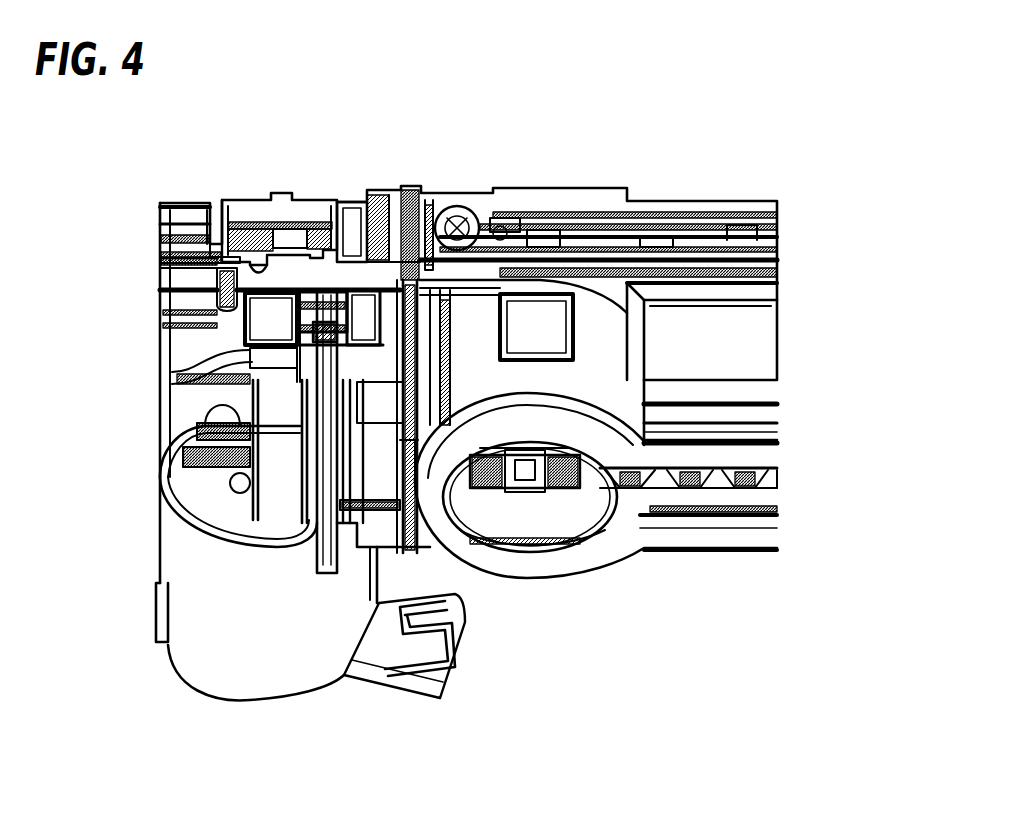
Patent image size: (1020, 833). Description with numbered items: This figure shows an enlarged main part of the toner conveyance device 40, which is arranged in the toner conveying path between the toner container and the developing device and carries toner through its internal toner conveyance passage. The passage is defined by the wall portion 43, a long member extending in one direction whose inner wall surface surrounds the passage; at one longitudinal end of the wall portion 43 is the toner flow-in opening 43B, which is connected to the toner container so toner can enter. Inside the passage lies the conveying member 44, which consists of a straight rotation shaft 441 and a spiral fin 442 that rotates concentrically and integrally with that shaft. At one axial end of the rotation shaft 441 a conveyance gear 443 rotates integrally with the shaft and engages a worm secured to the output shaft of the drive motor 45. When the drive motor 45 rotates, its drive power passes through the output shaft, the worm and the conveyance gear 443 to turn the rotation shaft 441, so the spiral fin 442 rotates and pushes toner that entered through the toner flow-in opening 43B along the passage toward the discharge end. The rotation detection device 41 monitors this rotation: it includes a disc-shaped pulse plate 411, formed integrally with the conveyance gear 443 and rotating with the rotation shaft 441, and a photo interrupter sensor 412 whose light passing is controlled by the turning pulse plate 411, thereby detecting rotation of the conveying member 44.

The toner conveyance device 40 is at (468, 384).
The rotation detection device 41 is at (76, 326).
The pulse plate 411 is at (323, 348).
The Photo Interrupter Sensor (PI sensor) 412 is at (273, 325).
The wall portion 43 is at (750, 540).
The toner flow-in opening 43B is at (548, 520).
The conveying member 44 is at (588, 533).
The rotation shaft 441 is at (585, 455).
The spiral fin 442 is at (680, 475).
The conveyance gear 443 is at (278, 497).
The drive motor 45 is at (247, 662).